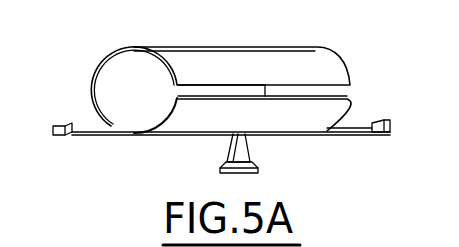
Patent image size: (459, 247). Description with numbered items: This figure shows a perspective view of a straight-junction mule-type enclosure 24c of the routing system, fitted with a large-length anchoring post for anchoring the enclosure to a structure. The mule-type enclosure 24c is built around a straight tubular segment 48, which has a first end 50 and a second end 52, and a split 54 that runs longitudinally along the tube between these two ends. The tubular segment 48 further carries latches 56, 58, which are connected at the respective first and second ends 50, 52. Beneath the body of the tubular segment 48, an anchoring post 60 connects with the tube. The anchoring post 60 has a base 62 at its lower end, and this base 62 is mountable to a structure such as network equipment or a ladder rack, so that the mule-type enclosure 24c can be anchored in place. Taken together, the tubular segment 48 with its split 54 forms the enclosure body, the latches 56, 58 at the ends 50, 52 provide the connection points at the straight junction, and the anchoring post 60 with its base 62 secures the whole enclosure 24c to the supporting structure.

The straight-junction mule-type enclosure 24c is at (318, 40).
The straight tubular segment 48 is at (285, 125).
The first end 50 is at (118, 80).
The second end 52 is at (345, 106).
The split 54 is at (203, 88).
The latch 56 is at (64, 123).
The latch 58 is at (387, 121).
The anchoring post 60 is at (240, 152).
The base 62 is at (252, 160).